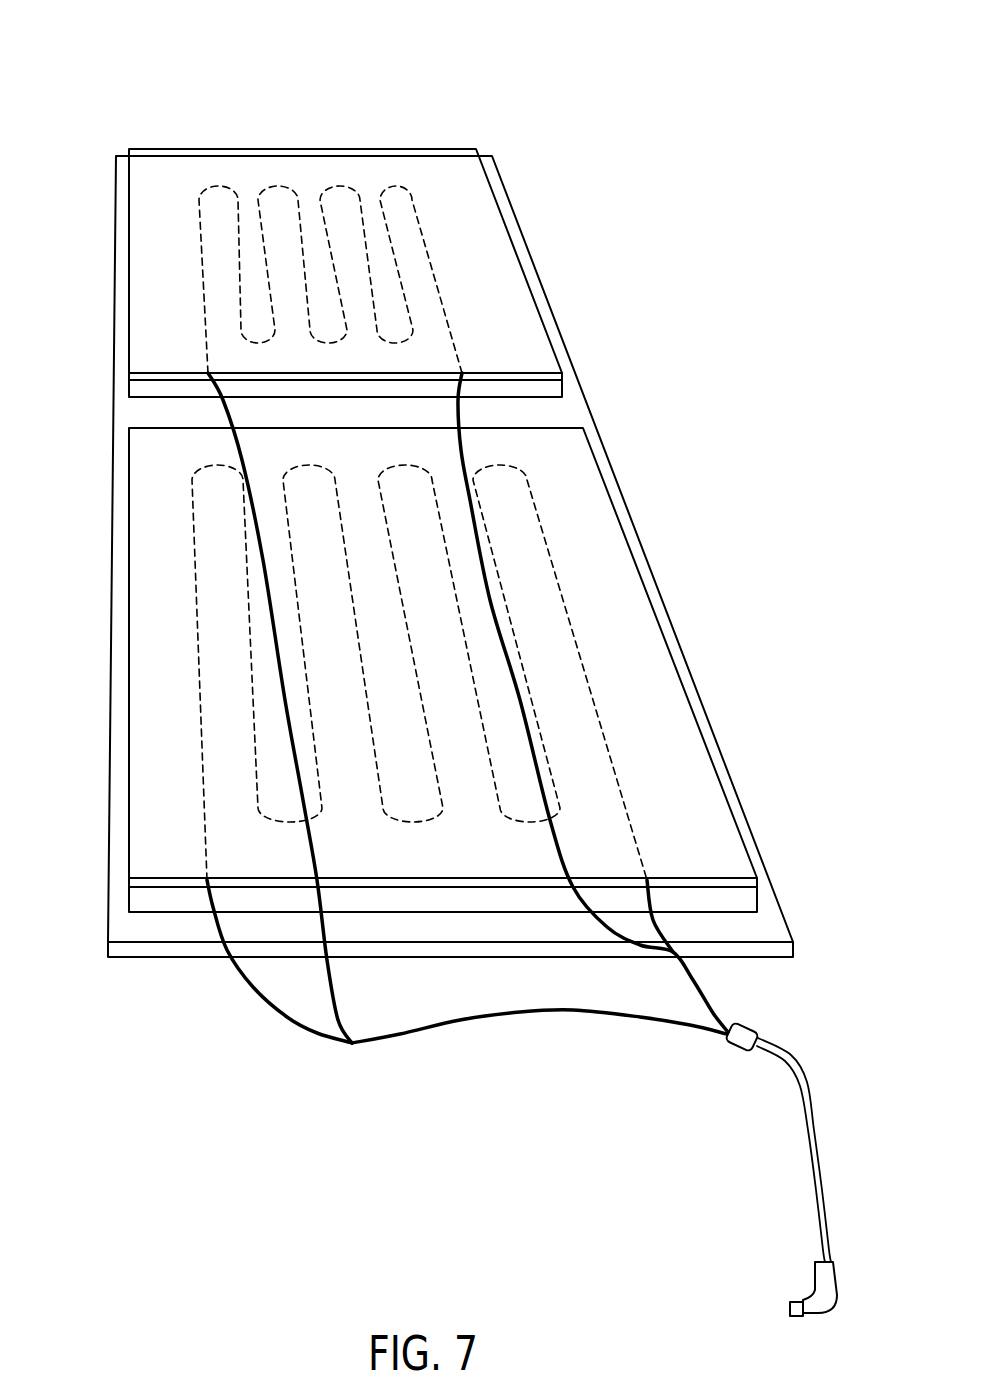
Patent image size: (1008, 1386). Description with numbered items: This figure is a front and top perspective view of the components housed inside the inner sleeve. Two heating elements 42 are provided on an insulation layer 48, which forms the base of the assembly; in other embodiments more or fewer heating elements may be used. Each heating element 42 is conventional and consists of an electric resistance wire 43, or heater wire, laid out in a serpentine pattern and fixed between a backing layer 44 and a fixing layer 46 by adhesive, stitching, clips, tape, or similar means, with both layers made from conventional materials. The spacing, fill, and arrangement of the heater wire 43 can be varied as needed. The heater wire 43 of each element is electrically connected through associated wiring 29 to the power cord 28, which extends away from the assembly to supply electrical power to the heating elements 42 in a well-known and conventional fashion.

The heating element 42 is at (443, 456).
The electric resistance wire 43 is at (440, 283).
The backing layer 44 is at (563, 388).
The fixing layer 46 is at (563, 377).
The insulation layer 48 is at (108, 946).
The wiring 29 is at (215, 403).
The power cord 28 is at (817, 1165).